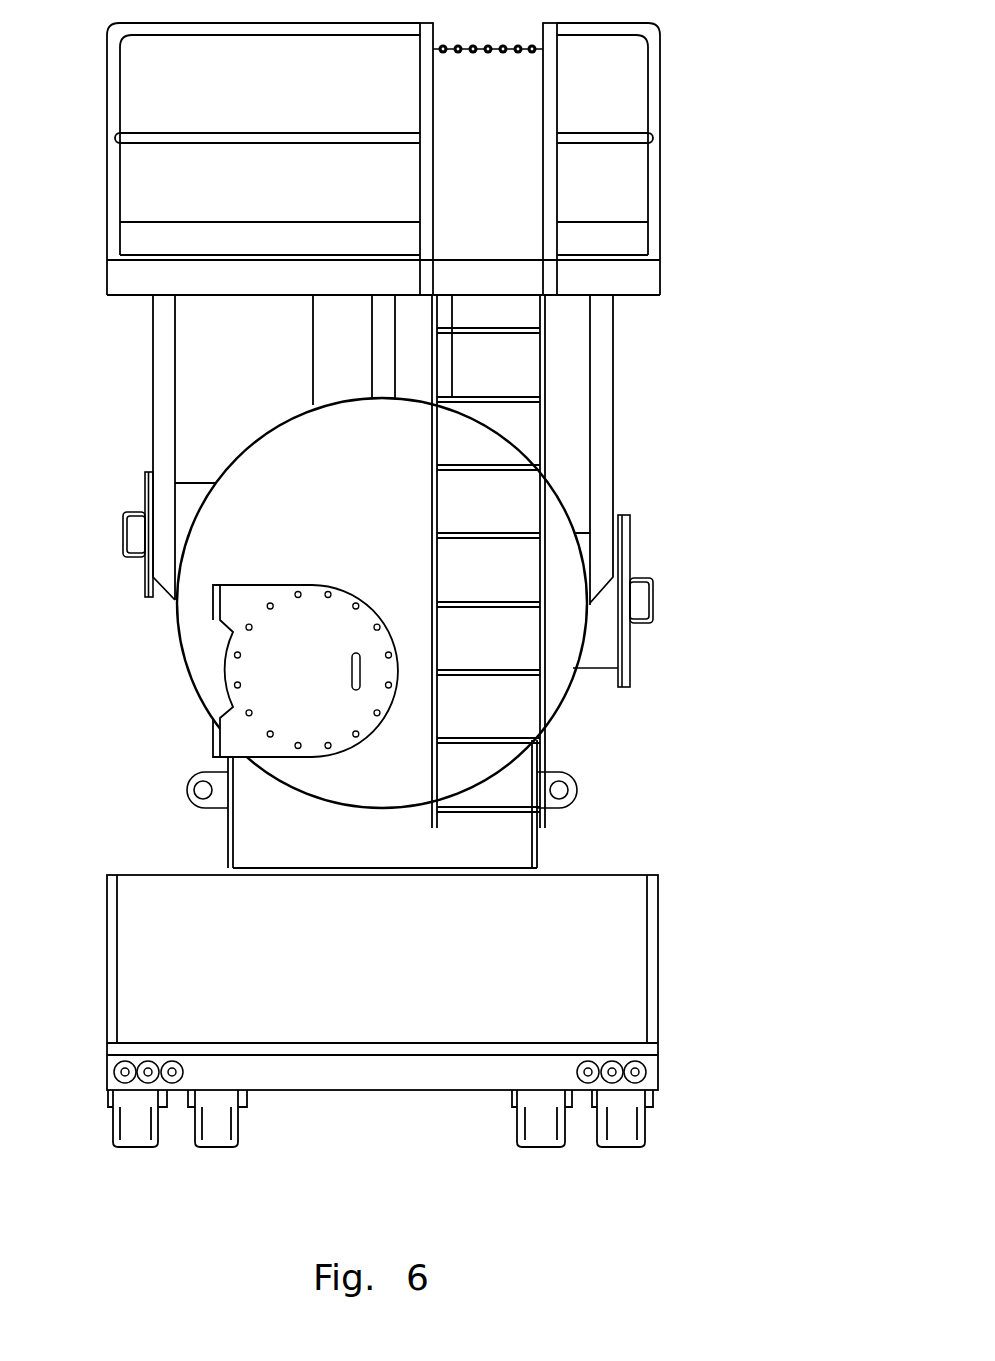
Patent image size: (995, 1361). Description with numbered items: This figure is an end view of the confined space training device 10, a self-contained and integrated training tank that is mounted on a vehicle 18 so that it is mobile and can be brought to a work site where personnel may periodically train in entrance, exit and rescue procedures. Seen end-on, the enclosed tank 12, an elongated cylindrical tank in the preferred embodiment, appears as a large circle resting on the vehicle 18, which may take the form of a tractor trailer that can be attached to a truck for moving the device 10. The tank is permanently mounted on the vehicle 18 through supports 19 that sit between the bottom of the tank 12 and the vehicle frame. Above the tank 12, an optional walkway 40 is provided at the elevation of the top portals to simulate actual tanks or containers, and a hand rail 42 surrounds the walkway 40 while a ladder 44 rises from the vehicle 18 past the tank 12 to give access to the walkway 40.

The confined space training device 10 is at (762, 452).
The enclosed tank 12 is at (260, 533).
The vehicle 18 is at (573, 930).
The supports 19 is at (263, 837).
The walkway 40 is at (635, 277).
The hand rail 42 is at (663, 120).
The ladder 44 is at (545, 365).